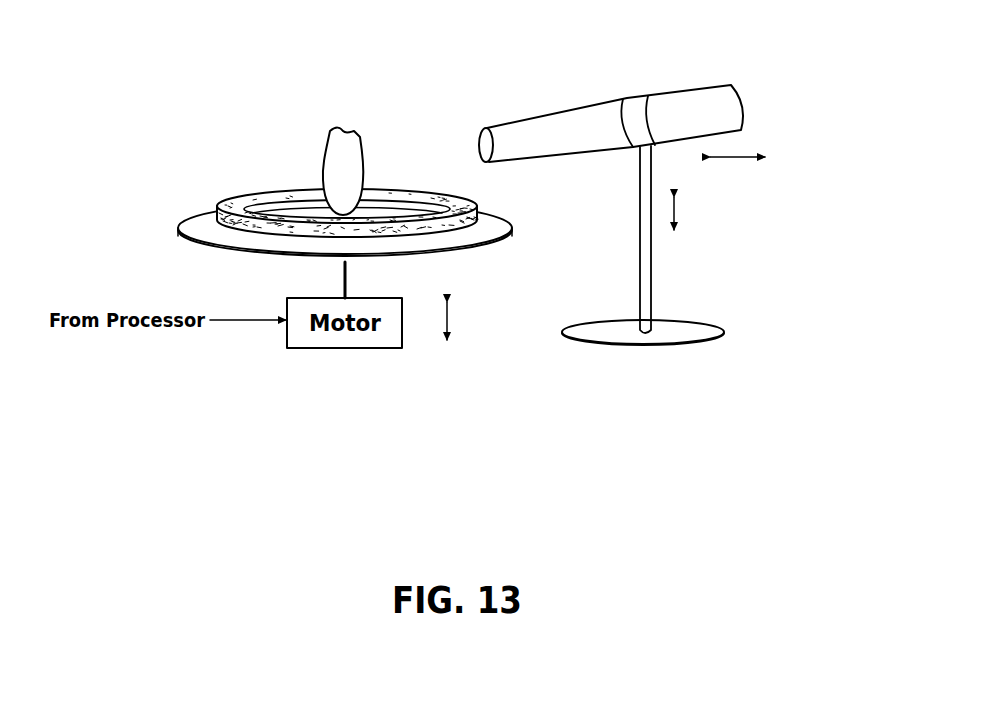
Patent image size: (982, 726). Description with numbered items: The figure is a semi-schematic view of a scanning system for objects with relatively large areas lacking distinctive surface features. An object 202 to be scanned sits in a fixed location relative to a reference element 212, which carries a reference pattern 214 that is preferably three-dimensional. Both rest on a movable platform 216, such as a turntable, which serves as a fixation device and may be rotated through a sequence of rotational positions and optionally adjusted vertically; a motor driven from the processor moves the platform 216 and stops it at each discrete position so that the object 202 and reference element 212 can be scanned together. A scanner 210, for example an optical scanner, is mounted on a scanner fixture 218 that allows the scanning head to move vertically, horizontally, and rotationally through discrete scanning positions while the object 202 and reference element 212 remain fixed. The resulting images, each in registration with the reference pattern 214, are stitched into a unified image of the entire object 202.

The object 202 is at (367, 183).
The scanner 210 is at (648, 97).
The reference element 212 is at (283, 190).
The reference pattern 214 is at (232, 210).
The movable platform 216 is at (177, 228).
The scanner fixture 218 is at (680, 248).